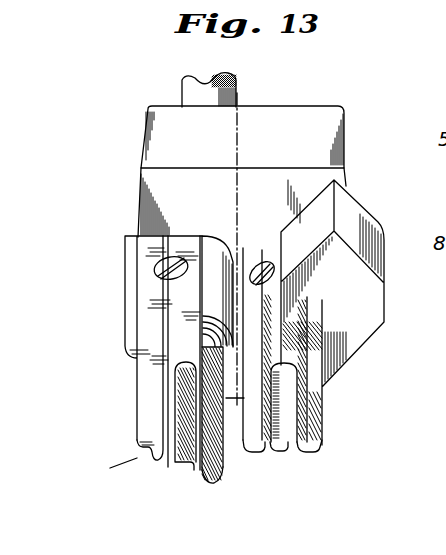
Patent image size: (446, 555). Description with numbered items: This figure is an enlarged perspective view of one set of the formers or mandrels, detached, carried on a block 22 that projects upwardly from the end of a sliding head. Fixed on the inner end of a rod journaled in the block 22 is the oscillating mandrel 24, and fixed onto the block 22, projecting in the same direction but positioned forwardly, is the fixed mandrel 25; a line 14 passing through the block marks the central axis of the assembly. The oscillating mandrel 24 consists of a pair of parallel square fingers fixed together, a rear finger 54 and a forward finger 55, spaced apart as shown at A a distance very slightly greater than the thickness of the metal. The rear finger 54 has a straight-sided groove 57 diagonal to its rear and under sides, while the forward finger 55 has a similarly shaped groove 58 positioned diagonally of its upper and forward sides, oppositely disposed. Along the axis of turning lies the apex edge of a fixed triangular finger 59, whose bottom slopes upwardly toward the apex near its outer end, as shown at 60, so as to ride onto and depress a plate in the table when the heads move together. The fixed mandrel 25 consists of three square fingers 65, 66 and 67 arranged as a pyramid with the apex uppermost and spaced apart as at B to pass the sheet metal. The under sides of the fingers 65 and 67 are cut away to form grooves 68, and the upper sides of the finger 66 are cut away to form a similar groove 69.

The center axis 14 is at (239, 98).
The block 22 is at (242, 137).
The oscillating mandrel 24 is at (176, 241).
The fixed mandrel 25 is at (281, 232).
The rear finger 54 is at (150, 330).
The forward finger 55 is at (183, 350).
The groove 57 is at (148, 453).
The groove 58 is at (188, 463).
The triangular finger 59 is at (223, 426).
The sloping bottom 60 is at (211, 474).
The finger 65 is at (246, 353).
The finger 66 is at (297, 386).
The finger 67 is at (308, 419).
The groove 68 is at (303, 452).
The groove 69 is at (281, 442).
The spacing A is at (168, 467).
The spacing B is at (258, 327).